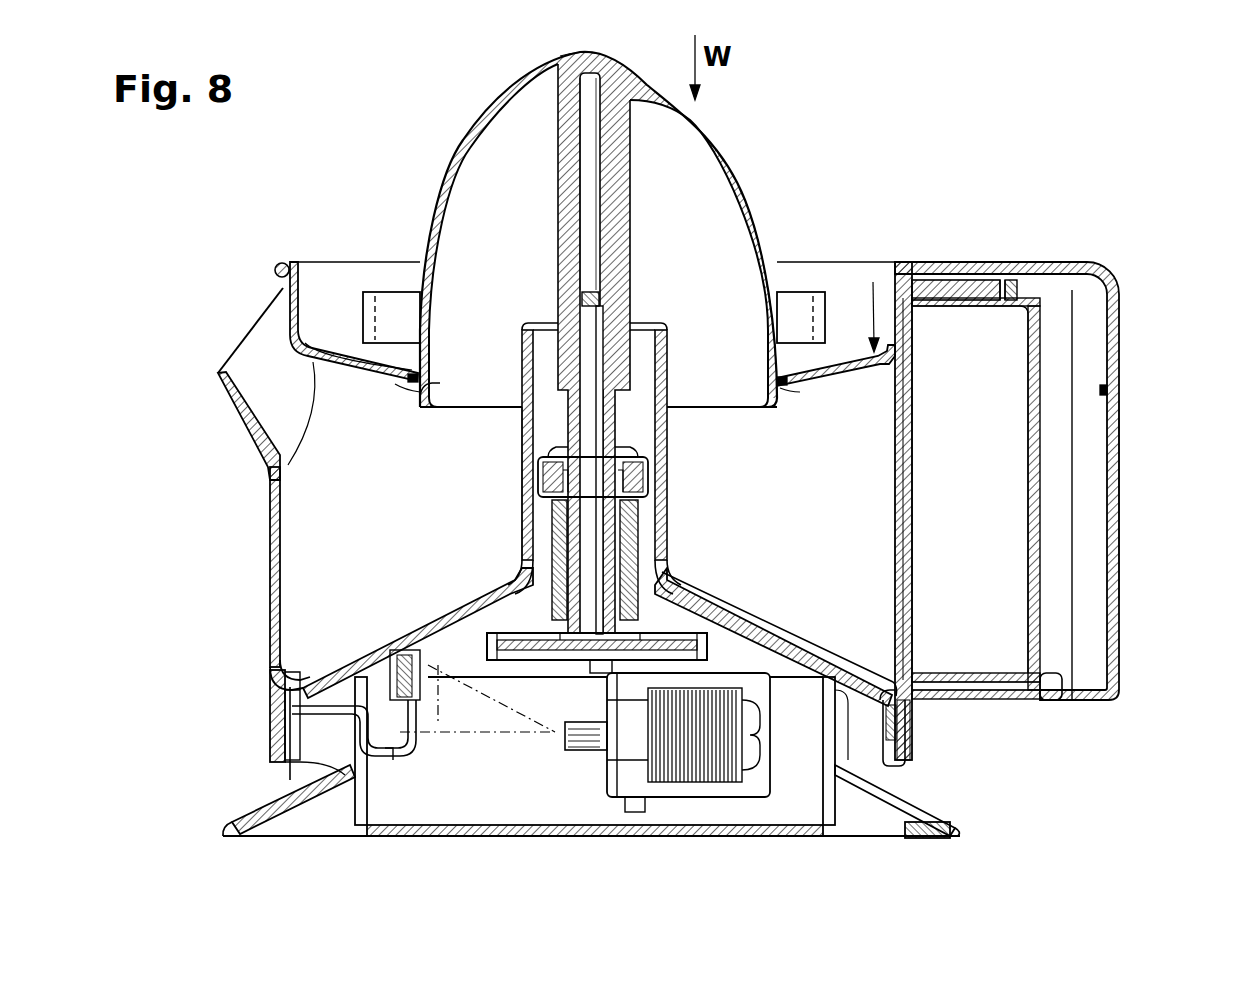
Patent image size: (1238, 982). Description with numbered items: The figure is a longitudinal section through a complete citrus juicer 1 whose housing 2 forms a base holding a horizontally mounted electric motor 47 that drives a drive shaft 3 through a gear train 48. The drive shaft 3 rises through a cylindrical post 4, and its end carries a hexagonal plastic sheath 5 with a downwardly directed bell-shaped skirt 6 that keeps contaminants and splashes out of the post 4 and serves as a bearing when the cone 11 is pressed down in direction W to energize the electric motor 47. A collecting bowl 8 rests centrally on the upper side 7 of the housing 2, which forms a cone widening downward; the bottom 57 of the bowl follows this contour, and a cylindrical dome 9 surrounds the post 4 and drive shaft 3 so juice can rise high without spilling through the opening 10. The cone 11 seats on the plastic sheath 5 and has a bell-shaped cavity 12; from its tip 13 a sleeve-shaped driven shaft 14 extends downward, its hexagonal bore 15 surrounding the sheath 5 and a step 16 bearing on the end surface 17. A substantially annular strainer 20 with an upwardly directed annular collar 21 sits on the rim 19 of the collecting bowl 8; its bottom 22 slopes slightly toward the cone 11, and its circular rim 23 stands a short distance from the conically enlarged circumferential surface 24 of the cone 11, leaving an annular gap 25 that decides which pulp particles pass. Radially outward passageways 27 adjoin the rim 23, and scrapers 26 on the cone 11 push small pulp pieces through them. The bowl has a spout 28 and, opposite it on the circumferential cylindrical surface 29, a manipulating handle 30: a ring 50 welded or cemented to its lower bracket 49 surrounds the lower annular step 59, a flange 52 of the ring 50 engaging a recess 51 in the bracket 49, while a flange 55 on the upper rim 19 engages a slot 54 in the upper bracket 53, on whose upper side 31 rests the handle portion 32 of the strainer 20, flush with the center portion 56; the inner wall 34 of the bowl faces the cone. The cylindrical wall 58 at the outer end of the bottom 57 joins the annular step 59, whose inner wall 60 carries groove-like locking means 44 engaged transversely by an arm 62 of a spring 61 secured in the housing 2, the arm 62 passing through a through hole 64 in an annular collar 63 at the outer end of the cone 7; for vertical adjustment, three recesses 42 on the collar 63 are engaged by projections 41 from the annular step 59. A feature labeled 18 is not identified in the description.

The citrus juicer 1 is at (722, 137).
The housing 2 is at (745, 836).
The drive shaft 3 is at (575, 545).
The cylindrical post 4 is at (635, 548).
The plastic sheath 5 is at (615, 424).
The bell-shaped skirt 6 is at (648, 478).
The upper side of the housing 7 is at (456, 616).
The collecting bowl 8 is at (756, 622).
The cylindrical dome 9 is at (523, 470).
The opening 10 is at (551, 325).
The cone 11 is at (735, 167).
The bell-shaped cavity 12 is at (744, 212).
The tip of the cavity 13 is at (585, 56).
The sleeve-shaped driven shaft 14 is at (566, 165).
The bore 15 is at (590, 200).
The step 16 is at (607, 286).
The end surface 17 is at (584, 294).
The hood wall 18 is at (508, 98).
The rim of the collecting bowl 19 is at (901, 262).
The strainer 20 is at (873, 282).
The annular collar 21 is at (280, 262).
The bottom of the strainer 22 is at (851, 370).
The circular rim 23 is at (440, 386).
The circumferential surface 24 is at (410, 368).
The annular gap 25 is at (411, 385).
The scrapers 26 is at (398, 302).
The passageways 27 is at (410, 386).
The spout 28 is at (230, 382).
The circumferential cylindrical surface 29 is at (915, 490).
The manipulating handle 30 is at (1020, 700).
The upper side 31 is at (1080, 265).
The handle portion 32 is at (1001, 280).
The inner wall 34 is at (903, 548).
The projection 41 is at (880, 762).
The recesses 42 is at (880, 700).
The locking means 44 is at (347, 792).
The electric motor 47 is at (688, 800).
The gear train 48 is at (488, 738).
The lower bracket 49 is at (1004, 692).
The ring 50 is at (274, 700).
The recess 51 is at (1053, 700).
The flange 52 is at (953, 673).
The upper bracket 53 is at (951, 306).
The slot 54 is at (1012, 288).
The flange 55 is at (952, 282).
The center portion 56 is at (1120, 500).
The bottom of the collecting bowl 57 is at (785, 652).
The cylindrical wall 58 is at (271, 578).
The annular step 59 is at (276, 749).
The inner wall 60 is at (300, 771).
The spring 61 is at (390, 752).
The arm 62 is at (335, 706).
The annular collar 63 is at (276, 723).
The through hole 64 is at (272, 678).